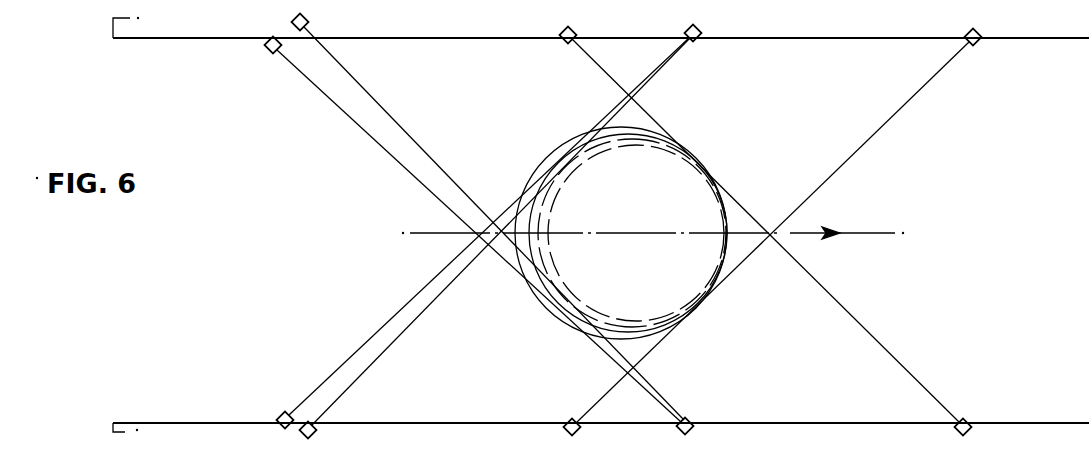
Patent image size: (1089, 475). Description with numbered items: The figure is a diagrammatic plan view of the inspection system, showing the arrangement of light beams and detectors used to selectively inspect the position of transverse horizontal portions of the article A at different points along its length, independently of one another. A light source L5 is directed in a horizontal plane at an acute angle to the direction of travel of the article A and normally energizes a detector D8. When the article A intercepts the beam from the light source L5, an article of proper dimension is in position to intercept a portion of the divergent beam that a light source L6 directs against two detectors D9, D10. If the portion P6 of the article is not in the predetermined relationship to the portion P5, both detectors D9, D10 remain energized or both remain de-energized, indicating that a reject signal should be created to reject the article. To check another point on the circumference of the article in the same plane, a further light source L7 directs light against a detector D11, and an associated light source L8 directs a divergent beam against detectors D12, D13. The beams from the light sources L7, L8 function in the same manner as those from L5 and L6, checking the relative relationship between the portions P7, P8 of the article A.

The detector D8 is at (565, 45).
The detector D9 is at (268, 55).
The detector D10 is at (309, 22).
The detector D11 is at (981, 45).
The detector D12 is at (288, 397).
The detector D13 is at (316, 426).
The light source L5 is at (968, 418).
The light source L6 is at (690, 418).
The light source L7 is at (568, 419).
The light source L8 is at (699, 42).
The portion of article P5 is at (700, 162).
The portion of article P6 is at (560, 300).
The portion of article P7 is at (700, 302).
The portion of article P8 is at (565, 160).
The article A is at (670, 318).